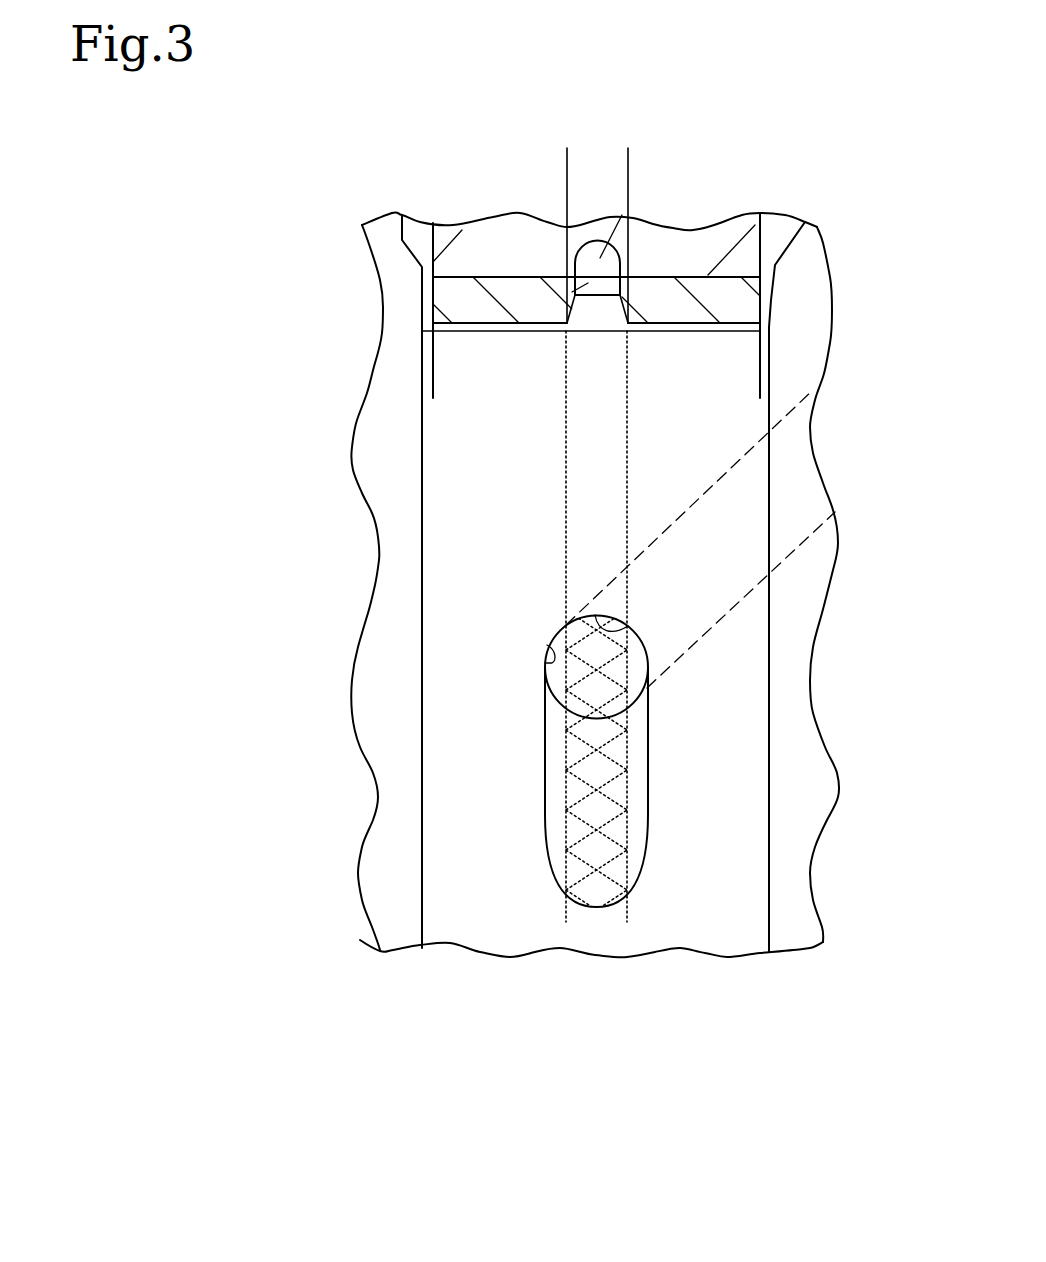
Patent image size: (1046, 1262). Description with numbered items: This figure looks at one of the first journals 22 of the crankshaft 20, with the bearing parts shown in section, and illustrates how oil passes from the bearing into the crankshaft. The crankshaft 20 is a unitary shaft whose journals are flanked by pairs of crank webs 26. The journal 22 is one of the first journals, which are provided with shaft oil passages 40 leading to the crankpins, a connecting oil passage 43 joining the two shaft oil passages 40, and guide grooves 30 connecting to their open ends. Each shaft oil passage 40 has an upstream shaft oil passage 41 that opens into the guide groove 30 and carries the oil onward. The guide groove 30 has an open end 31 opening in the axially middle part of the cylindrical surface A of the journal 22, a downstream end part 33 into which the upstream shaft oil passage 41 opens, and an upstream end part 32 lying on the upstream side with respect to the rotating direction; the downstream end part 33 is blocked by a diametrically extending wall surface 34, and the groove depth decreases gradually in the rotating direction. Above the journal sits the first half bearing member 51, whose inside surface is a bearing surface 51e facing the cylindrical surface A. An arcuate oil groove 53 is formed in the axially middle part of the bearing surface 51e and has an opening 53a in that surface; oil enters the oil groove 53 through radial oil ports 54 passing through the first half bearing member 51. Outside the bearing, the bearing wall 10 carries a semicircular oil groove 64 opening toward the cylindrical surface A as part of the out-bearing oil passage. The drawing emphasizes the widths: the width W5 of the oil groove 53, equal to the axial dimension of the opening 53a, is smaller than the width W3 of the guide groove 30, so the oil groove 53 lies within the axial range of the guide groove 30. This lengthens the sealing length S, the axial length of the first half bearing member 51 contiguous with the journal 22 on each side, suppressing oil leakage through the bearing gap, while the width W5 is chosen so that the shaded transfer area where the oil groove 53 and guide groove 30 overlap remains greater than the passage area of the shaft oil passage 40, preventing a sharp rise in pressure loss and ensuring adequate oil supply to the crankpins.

The bearing wall 10 is at (498, 240).
The crankshaft 20 is at (810, 811).
The journal 22 is at (431, 901).
The crank webs 26 is at (403, 277).
The guide groove 30 is at (542, 748).
The open end 31 is at (640, 767).
The upstream end part 32 is at (593, 860).
The downstream end part 33 is at (596, 668).
The wall surface 34 is at (628, 626).
The shaft oil passage 40 is at (788, 563).
The upstream shaft oil passage 41 is at (748, 457).
The connecting oil passage 43 is at (547, 645).
The first half bearing member 51 is at (737, 305).
The bearing surface 51e is at (460, 331).
The oil groove 53 is at (591, 321).
The opening 53a is at (609, 325).
The oil port 54 is at (565, 297).
The semicircular oil groove 64 is at (600, 245).
The cylindrical surface A is at (425, 793).
The sealing length S is at (747, 367).
The width of the guide groove W3 is at (543, 855).
The width of the oil groove W5 is at (597, 170).